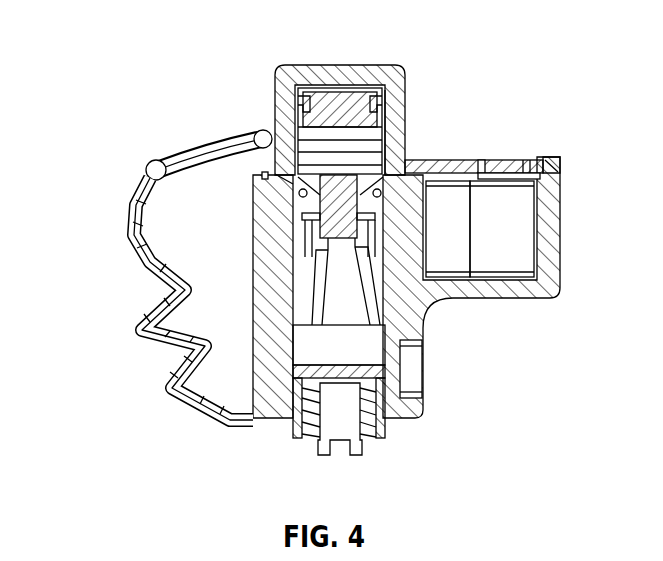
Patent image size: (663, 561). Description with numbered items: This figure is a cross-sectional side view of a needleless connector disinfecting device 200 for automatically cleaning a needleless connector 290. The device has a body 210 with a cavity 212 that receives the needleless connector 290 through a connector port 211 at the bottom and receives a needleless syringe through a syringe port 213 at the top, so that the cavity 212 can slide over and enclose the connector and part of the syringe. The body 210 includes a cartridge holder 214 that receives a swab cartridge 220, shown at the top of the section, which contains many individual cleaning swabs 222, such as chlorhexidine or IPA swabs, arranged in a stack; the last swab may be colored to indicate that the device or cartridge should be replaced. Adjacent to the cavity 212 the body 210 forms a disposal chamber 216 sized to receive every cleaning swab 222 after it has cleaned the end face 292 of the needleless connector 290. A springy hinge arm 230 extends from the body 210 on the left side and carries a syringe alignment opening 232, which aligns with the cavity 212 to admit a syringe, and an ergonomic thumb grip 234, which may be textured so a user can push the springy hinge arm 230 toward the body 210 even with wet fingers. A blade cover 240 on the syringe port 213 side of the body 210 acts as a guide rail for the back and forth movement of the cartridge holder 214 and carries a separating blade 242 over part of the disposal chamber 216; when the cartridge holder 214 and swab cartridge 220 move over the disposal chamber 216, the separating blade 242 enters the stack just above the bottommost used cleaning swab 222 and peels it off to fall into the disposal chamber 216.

The needleless connector disinfecting device 200 is at (106, 40).
The body 210 is at (424, 332).
The connector port 211 is at (300, 437).
The cavity 212 is at (298, 232).
The syringe port 213 is at (407, 158).
The cartridge holder 214 is at (406, 123).
The disposal chamber 216 is at (498, 258).
The swab cartridge 220 is at (404, 88).
The cleaning swabs 222 is at (318, 140).
The springy hinge arm 230 is at (156, 272).
The syringe alignment opening 232 is at (198, 150).
The ergonomic thumb grip 234 is at (133, 234).
The blade cover 240 is at (503, 162).
The separating blade 242 is at (527, 165).
The needleless connector 290 is at (387, 432).
The end face 292 is at (300, 198).